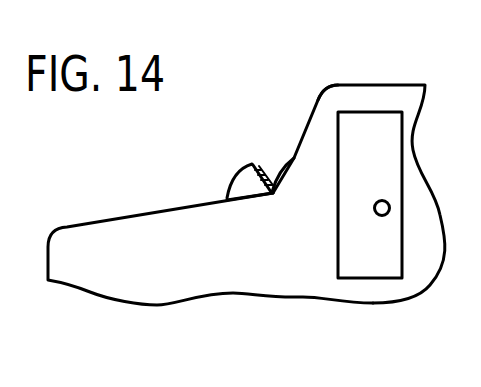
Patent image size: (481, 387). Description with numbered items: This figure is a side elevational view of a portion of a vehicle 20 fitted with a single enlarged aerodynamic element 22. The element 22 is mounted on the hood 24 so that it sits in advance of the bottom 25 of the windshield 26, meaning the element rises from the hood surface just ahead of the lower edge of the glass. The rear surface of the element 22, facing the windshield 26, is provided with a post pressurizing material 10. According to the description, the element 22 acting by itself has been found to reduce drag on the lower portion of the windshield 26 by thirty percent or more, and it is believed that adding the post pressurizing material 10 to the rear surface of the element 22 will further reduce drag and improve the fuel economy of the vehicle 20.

The post pressurizing material 10 is at (273, 193).
The vehicle 20 is at (290, 282).
The single enlarged aerodynamic element 22 is at (233, 174).
The hood 24 is at (127, 217).
The bottom of windshield 25 is at (282, 165).
The windshield 26 is at (328, 88).